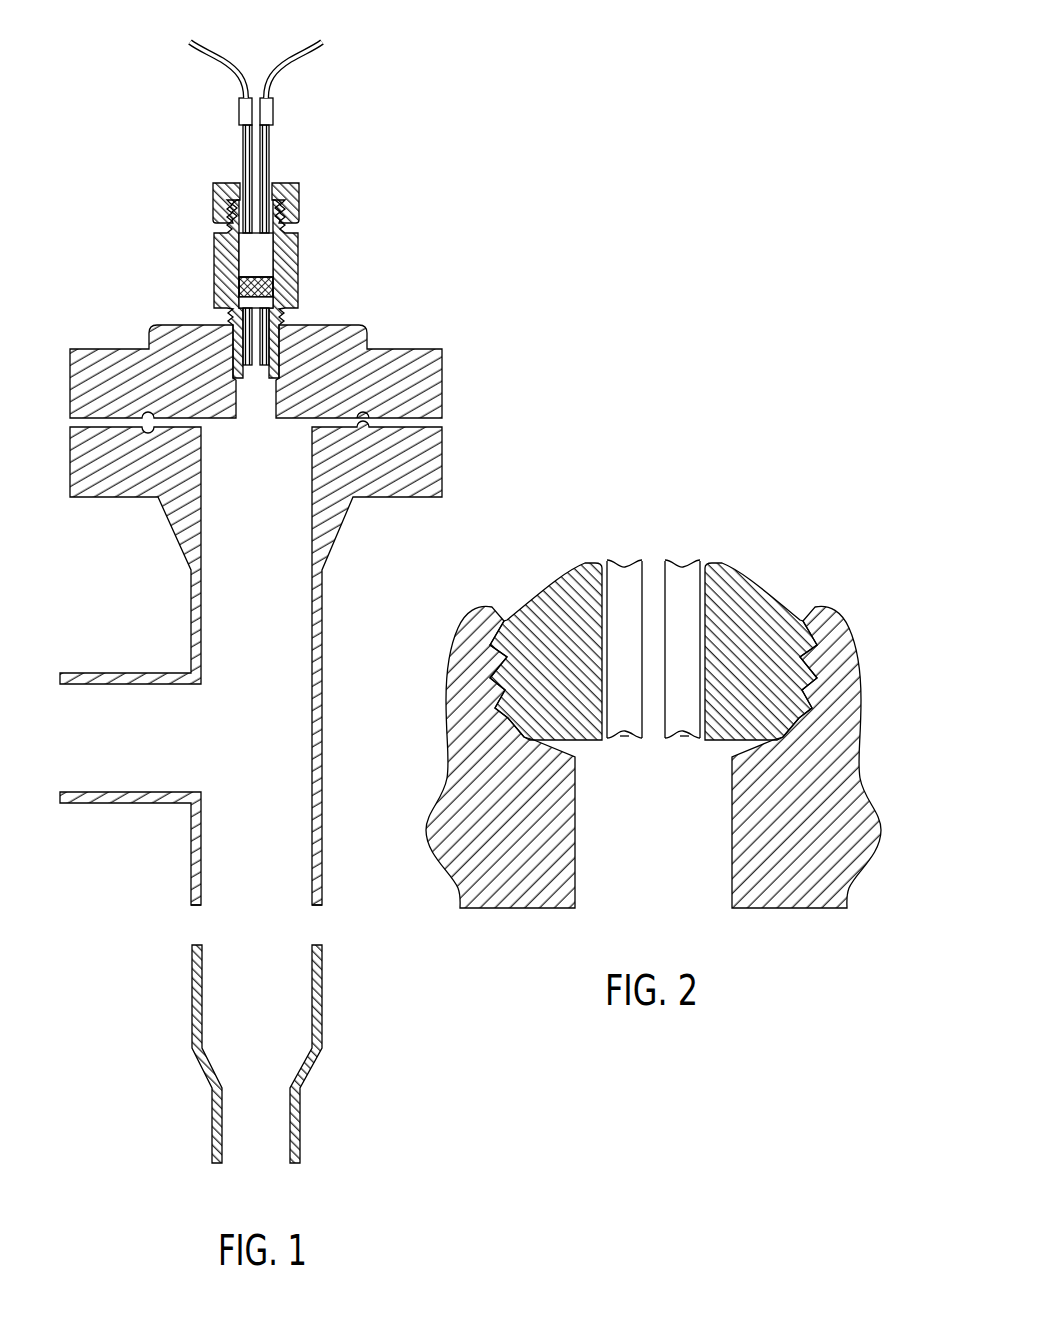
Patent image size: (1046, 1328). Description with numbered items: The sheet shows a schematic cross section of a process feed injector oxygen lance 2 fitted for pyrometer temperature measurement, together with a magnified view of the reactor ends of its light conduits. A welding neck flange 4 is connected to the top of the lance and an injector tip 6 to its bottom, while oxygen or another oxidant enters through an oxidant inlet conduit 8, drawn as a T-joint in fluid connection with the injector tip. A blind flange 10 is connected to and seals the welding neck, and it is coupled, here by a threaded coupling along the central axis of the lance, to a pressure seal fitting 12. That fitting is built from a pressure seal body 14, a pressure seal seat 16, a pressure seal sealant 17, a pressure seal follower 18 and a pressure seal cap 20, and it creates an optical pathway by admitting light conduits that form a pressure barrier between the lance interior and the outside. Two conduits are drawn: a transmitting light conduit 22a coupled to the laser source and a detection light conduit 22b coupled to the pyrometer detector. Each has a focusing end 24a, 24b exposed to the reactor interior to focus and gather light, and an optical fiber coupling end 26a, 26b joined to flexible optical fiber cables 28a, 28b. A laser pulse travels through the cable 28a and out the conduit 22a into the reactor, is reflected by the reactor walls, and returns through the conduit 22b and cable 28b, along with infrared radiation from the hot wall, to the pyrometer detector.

In FIG. 1, the process feed injector oxygen lance 2 is at (128, 923).
In FIG. 1, the welding neck flange 4 is at (442, 467).
In FIG. 1, the injector tip 6 is at (300, 1115).
In FIG. 1, the oxidant inlet conduit 8 is at (126, 665).
In FIG. 1, the blind flange 10 is at (405, 349).
In FIG. 2, the blind flange 10 is at (848, 705).
In FIG. 1, the pressure seal fitting 12 is at (229, 269).
In FIG. 1, the pressure seal body 14 is at (273, 255).
In FIG. 2, the pressure seal body 14 is at (750, 603).
In FIG. 1, the pressure seal seat 16 is at (262, 307).
In FIG. 1, the pressure seal sealant 17 is at (270, 273).
In FIG. 1, the pressure seal follower 18 is at (245, 263).
In FIG. 1, the pressure seal cap 20 is at (217, 200).
In FIG. 1, the transmitting light conduit 22a is at (264, 167).
In FIG. 2, the transmitting light conduit 22a is at (683, 566).
In FIG. 1, the detection light conduit 22b is at (245, 163).
In FIG. 2, the detection light conduit 22b is at (623, 567).
In FIG. 2, the focusing end 24a is at (687, 732).
In FIG. 2, the focusing end 24b is at (627, 732).
In FIG. 1, the optical fiber coupling end 26a is at (267, 112).
In FIG. 1, the optical fiber coupling end 26b is at (245, 115).
In FIG. 1, the flexible optical fiber cable 28a is at (325, 41).
In FIG. 1, the flexible optical fiber cable 28b is at (187, 41).